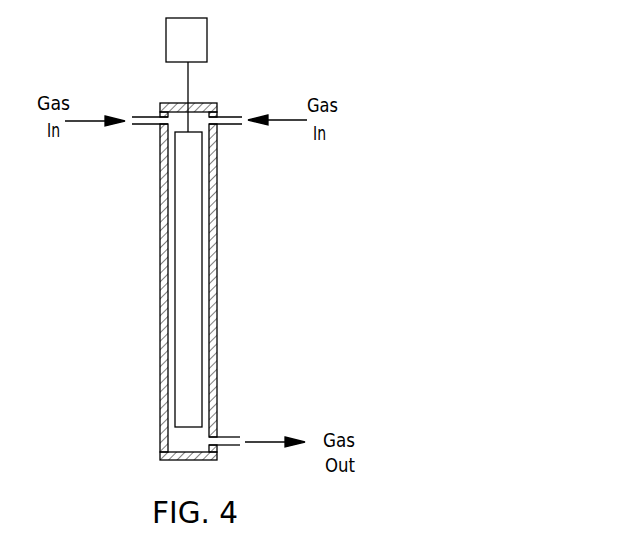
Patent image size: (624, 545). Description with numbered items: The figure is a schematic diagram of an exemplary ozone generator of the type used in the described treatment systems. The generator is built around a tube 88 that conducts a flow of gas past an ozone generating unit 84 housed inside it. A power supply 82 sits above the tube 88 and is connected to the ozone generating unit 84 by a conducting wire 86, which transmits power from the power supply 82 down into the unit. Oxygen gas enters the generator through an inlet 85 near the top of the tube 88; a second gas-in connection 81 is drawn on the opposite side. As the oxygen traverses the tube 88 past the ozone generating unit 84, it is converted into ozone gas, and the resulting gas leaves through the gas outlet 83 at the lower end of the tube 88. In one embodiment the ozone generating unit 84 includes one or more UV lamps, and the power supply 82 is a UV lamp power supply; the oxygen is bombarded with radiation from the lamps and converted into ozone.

The gas inlet 81 is at (153, 117).
The power supply 82 is at (207, 40).
The gas outlet 83 is at (237, 437).
The ozone generating unit 84 is at (175, 280).
The inlet 85 is at (233, 113).
The conducting wire 86 is at (188, 82).
The tube 88 is at (213, 280).